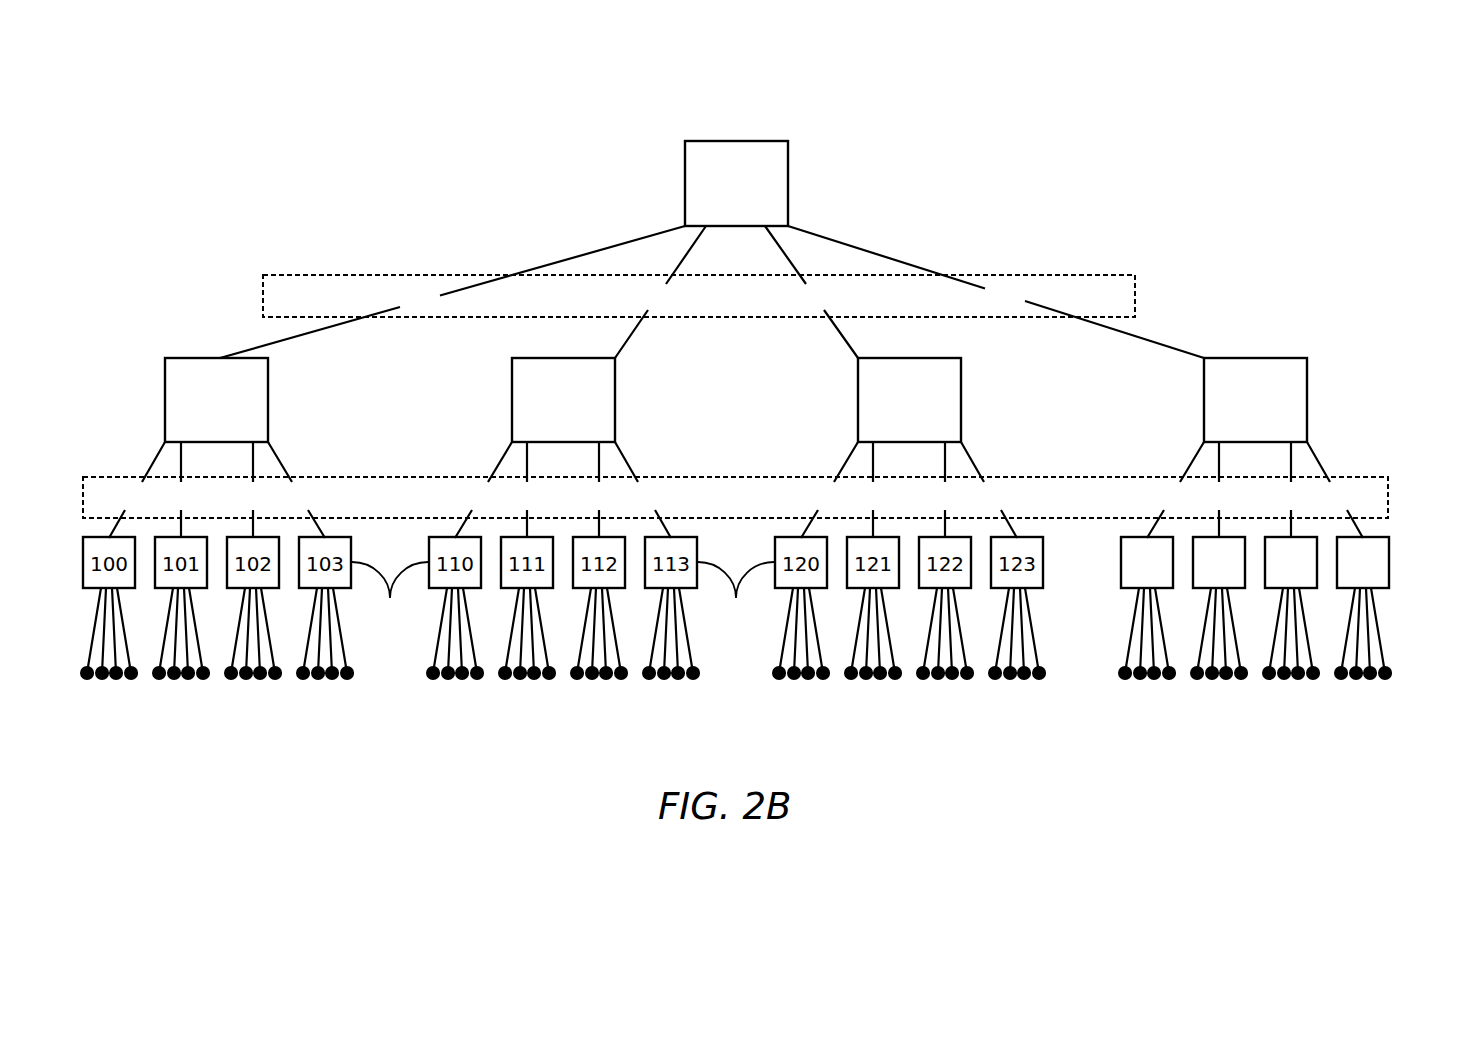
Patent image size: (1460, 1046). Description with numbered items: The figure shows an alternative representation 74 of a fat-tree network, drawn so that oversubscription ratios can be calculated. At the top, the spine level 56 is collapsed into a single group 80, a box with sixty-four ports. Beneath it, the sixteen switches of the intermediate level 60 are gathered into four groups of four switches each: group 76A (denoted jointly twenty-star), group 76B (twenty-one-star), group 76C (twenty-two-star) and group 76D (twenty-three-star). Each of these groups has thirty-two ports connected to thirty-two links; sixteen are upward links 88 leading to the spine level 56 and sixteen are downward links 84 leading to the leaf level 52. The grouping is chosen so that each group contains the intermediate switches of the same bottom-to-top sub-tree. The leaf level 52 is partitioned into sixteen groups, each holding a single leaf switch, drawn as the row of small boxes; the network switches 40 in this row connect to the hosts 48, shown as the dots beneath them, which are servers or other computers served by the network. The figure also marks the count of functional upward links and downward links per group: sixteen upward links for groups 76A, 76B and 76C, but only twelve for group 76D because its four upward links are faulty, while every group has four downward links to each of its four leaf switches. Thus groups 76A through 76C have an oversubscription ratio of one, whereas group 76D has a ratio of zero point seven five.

The alternative representation 74 is at (1198, 126).
The spine level 56 is at (808, 185).
The single group 80 is at (685, 190).
The upward links 88 is at (1135, 298).
The group 76A is at (268, 400).
The group 76B is at (615, 400).
The group 76C is at (961, 400).
The group 76D is at (1204, 396).
The intermediate level 60 is at (1335, 396).
The downward links 84 is at (103, 477).
The leaf level 52 is at (1403, 563).
The network switches 40 is at (736, 605).
The hosts 48 is at (736, 670).